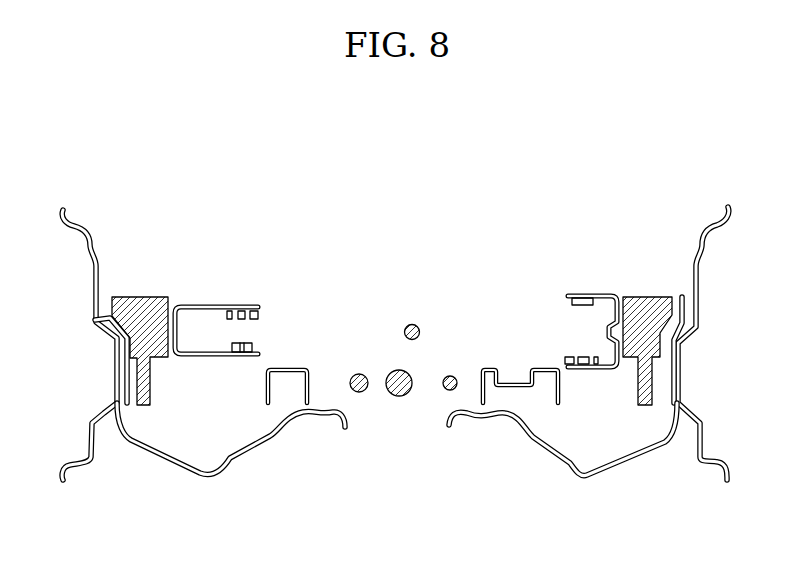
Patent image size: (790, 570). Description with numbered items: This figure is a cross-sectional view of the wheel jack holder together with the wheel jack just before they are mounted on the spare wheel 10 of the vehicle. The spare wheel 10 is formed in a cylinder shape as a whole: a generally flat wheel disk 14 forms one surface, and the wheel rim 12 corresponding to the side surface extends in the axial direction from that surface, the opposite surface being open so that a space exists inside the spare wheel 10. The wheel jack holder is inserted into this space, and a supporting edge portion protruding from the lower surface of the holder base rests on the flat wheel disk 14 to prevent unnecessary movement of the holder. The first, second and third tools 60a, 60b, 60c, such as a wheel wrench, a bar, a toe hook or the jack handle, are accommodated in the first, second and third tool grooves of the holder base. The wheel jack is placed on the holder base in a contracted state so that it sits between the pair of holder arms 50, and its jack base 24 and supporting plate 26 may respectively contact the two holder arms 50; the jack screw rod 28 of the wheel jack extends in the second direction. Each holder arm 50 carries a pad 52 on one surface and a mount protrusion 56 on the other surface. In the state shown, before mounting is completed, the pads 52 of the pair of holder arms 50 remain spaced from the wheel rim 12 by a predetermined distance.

The spare wheel 10 is at (382, 374).
The wheel rim 12 is at (93, 279).
The wheel disk 14 is at (315, 418).
The jack base 24 is at (597, 293).
The supporting plate 26 is at (205, 306).
The jack screw rod 28 is at (420, 335).
The holder arm 50 is at (116, 313).
The pad 52 is at (95, 319).
The mount protrusion 56 is at (164, 296).
The first tool 60a is at (365, 392).
The second tool 60b is at (402, 396).
The third tool 60c is at (448, 390).